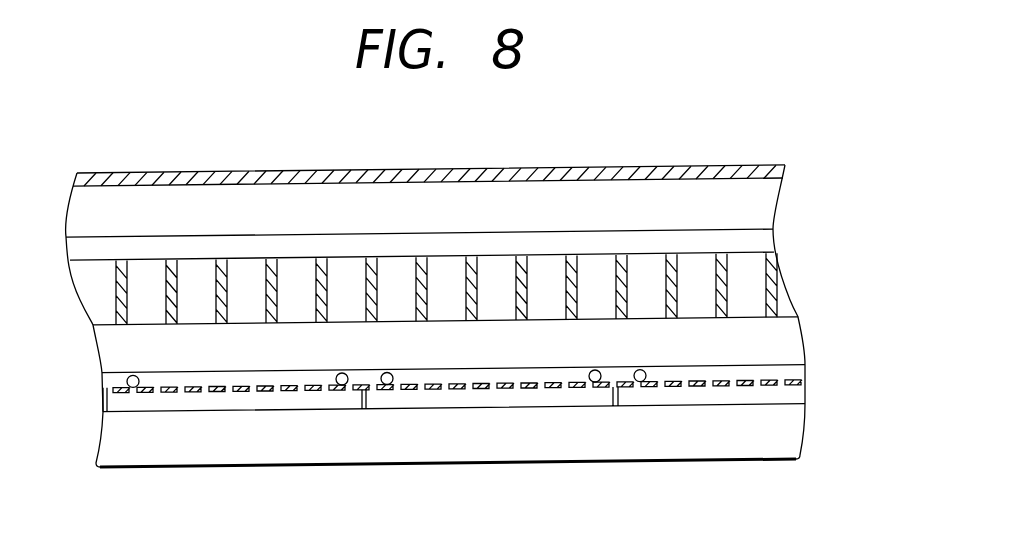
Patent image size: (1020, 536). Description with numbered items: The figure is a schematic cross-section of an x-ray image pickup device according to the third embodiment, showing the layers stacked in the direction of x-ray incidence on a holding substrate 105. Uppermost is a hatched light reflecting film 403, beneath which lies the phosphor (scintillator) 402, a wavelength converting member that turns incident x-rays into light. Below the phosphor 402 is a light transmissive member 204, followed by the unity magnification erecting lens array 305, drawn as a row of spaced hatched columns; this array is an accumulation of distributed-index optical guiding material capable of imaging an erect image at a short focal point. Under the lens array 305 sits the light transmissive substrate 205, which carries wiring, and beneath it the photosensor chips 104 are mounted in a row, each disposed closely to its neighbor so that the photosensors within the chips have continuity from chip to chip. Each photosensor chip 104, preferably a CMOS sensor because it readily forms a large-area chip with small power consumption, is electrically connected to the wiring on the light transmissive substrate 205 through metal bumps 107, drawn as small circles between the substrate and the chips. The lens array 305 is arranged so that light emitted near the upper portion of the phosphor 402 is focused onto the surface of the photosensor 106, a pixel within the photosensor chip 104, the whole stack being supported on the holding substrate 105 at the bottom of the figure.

The light reflecting film 403 is at (693, 173).
The phosphor (scintillator) 402 is at (763, 205).
The light transmissive member 204 is at (763, 240).
The unity magnification erecting lens array 305 is at (778, 297).
The light transmissive substrate 205 is at (790, 345).
The photosensor 106 is at (782, 388).
The photosensor chip 104 is at (223, 402).
The metal bump 107 is at (640, 382).
The holding substrate 105 is at (797, 432).